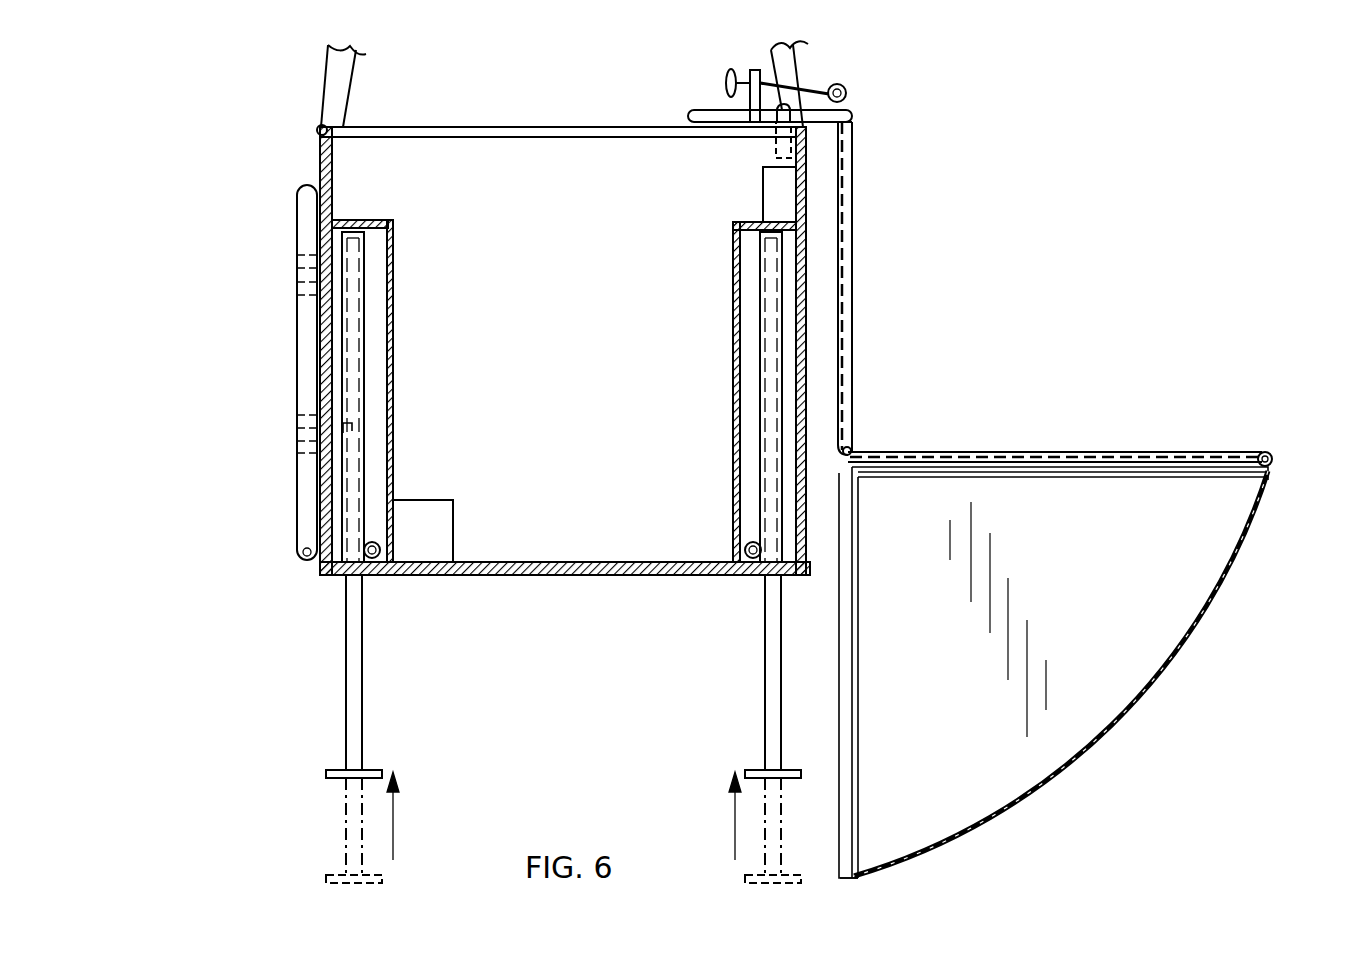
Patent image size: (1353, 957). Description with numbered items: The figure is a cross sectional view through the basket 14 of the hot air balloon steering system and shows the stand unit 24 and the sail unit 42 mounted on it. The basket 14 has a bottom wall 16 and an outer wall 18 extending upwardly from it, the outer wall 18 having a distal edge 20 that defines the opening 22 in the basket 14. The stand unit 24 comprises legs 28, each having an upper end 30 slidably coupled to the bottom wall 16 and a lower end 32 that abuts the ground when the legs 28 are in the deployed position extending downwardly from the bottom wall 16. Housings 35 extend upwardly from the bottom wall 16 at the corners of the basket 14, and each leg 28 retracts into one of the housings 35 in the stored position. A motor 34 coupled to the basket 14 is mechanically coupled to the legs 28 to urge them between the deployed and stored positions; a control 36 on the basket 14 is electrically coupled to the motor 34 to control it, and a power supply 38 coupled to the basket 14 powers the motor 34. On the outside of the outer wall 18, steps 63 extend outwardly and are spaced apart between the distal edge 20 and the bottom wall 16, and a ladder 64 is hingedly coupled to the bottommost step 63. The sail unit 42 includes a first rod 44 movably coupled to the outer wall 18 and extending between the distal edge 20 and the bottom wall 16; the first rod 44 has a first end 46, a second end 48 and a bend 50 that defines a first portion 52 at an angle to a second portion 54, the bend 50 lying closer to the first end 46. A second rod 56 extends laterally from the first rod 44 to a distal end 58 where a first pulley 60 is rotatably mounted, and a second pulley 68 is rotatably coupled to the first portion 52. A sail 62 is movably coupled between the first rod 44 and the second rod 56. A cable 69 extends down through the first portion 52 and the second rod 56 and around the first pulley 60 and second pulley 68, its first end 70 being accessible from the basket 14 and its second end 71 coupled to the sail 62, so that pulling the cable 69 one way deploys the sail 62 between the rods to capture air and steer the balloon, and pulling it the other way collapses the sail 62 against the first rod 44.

The basket 14 is at (318, 176).
The bottom wall 16 is at (470, 578).
The outer wall 18 is at (808, 290).
The distal edge 20 is at (800, 68).
The opening 22 is at (478, 185).
The stand unit 24 is at (318, 642).
The legs 28 is at (362, 697).
The upper end 30 is at (343, 428).
The lower end 32 is at (348, 775).
The motor 34 is at (364, 548).
The housings 35 is at (388, 222).
The control 36 is at (742, 165).
The power supply 38 is at (455, 523).
The sail unit 42 is at (1110, 418).
The first rod 44 is at (858, 395).
The first end 46 is at (688, 115).
The second end 48 is at (890, 878).
The bend 50 is at (852, 118).
The first portion 52 is at (876, 232).
The second portion 54 is at (688, 100).
The second rod 56 is at (1198, 452).
The distal end 58 is at (1268, 452).
The first pulley 60 is at (1272, 470).
The sail 62 is at (1205, 612).
The steps 63 is at (315, 280).
The ladder 64 is at (305, 350).
The second pulley 68 is at (848, 96).
The cable 69 is at (843, 335).
The first end 70 is at (730, 80).
The second end 71 is at (1264, 480).